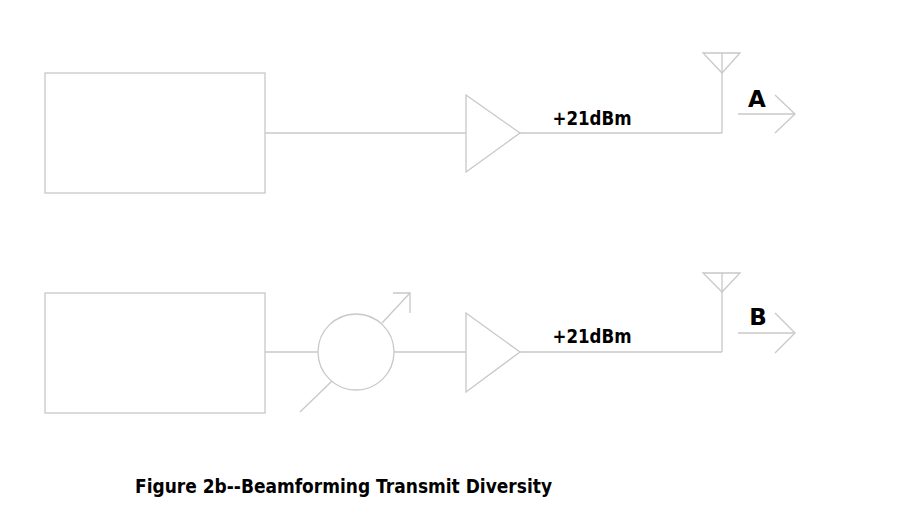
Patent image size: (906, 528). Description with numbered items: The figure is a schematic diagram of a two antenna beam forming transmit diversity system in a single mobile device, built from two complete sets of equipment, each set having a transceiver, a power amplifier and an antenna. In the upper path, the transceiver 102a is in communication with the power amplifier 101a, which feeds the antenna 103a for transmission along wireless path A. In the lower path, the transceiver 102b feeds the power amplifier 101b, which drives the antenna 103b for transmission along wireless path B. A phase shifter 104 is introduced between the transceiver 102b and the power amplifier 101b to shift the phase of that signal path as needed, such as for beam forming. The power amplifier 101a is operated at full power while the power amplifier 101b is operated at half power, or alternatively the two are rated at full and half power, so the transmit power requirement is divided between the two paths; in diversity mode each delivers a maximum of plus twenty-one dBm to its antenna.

The transceiver 102a is at (155, 118).
The transceiver 102b is at (155, 341).
The power amplifier 101a is at (485, 109).
The power amplifier 101b is at (500, 330).
The antenna 103a is at (722, 81).
The antenna 103b is at (722, 298).
The phase shifter 104 is at (355, 347).